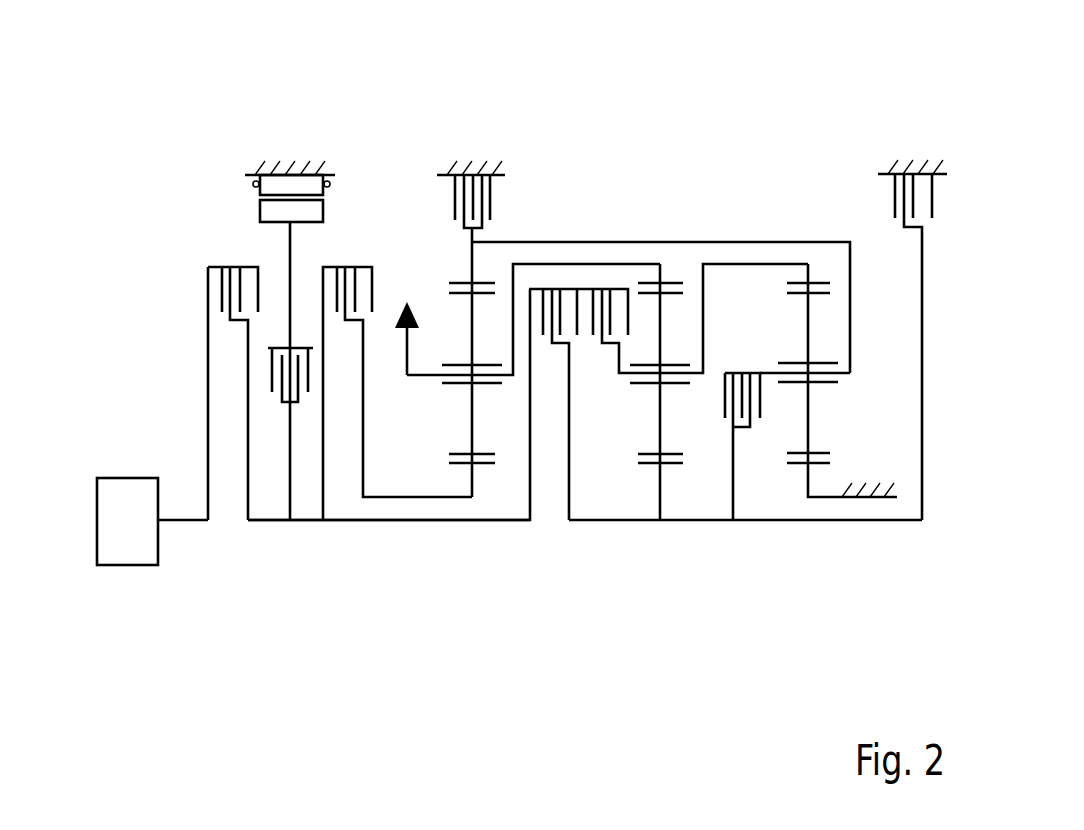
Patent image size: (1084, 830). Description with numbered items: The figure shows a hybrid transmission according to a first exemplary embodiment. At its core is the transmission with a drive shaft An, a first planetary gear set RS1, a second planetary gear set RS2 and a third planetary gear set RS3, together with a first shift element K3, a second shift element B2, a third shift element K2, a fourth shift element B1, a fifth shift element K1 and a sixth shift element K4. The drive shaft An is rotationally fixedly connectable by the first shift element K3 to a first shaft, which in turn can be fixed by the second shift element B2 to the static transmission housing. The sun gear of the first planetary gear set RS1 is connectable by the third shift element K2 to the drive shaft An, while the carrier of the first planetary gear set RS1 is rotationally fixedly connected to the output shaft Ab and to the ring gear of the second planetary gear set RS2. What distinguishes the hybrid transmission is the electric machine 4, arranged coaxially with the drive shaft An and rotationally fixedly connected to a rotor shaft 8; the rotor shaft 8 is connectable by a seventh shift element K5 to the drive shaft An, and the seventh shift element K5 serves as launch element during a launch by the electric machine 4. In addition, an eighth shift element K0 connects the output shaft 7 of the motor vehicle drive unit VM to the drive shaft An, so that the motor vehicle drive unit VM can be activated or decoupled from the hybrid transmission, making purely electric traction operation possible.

The motor vehicle drive unit VM is at (137, 493).
The output shaft 7 is at (205, 298).
The eighth shift element K0 is at (230, 258).
The electric machine 4 is at (293, 178).
The rotor shaft 8 is at (292, 257).
The seventh shift element K5 is at (301, 425).
The third shift element K2 is at (357, 255).
The fourth shift element B1 is at (500, 194).
The first planetary gear set RS1 is at (472, 532).
The output shaft Ab is at (408, 325).
The drive shaft An is at (389, 405).
The first shift element K3 is at (565, 278).
The fifth shift element K1 is at (614, 278).
The second planetary gear set RS2 is at (660, 532).
The sixth shift element K4 is at (742, 362).
The third planetary gear set RS3 is at (808, 532).
The second shift element B2 is at (878, 193).